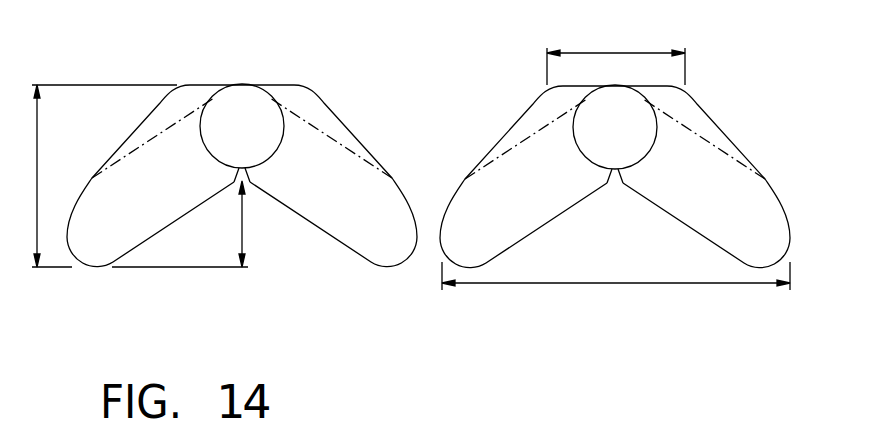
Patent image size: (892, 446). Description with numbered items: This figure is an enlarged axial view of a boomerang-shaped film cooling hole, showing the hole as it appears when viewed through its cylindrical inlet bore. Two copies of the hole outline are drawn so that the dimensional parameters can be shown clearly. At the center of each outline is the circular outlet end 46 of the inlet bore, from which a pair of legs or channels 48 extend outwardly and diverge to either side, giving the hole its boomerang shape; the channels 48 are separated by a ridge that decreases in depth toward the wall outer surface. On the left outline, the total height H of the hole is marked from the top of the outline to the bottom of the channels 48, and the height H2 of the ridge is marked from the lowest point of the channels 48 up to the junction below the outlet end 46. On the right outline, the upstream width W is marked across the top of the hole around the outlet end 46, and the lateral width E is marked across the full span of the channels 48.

The outlet end 46 is at (240, 117).
The channels 48 is at (180, 167).
The total height H is at (40, 174).
The ridge height H2 is at (245, 222).
The upstream width W is at (615, 53).
The lateral width E is at (615, 284).